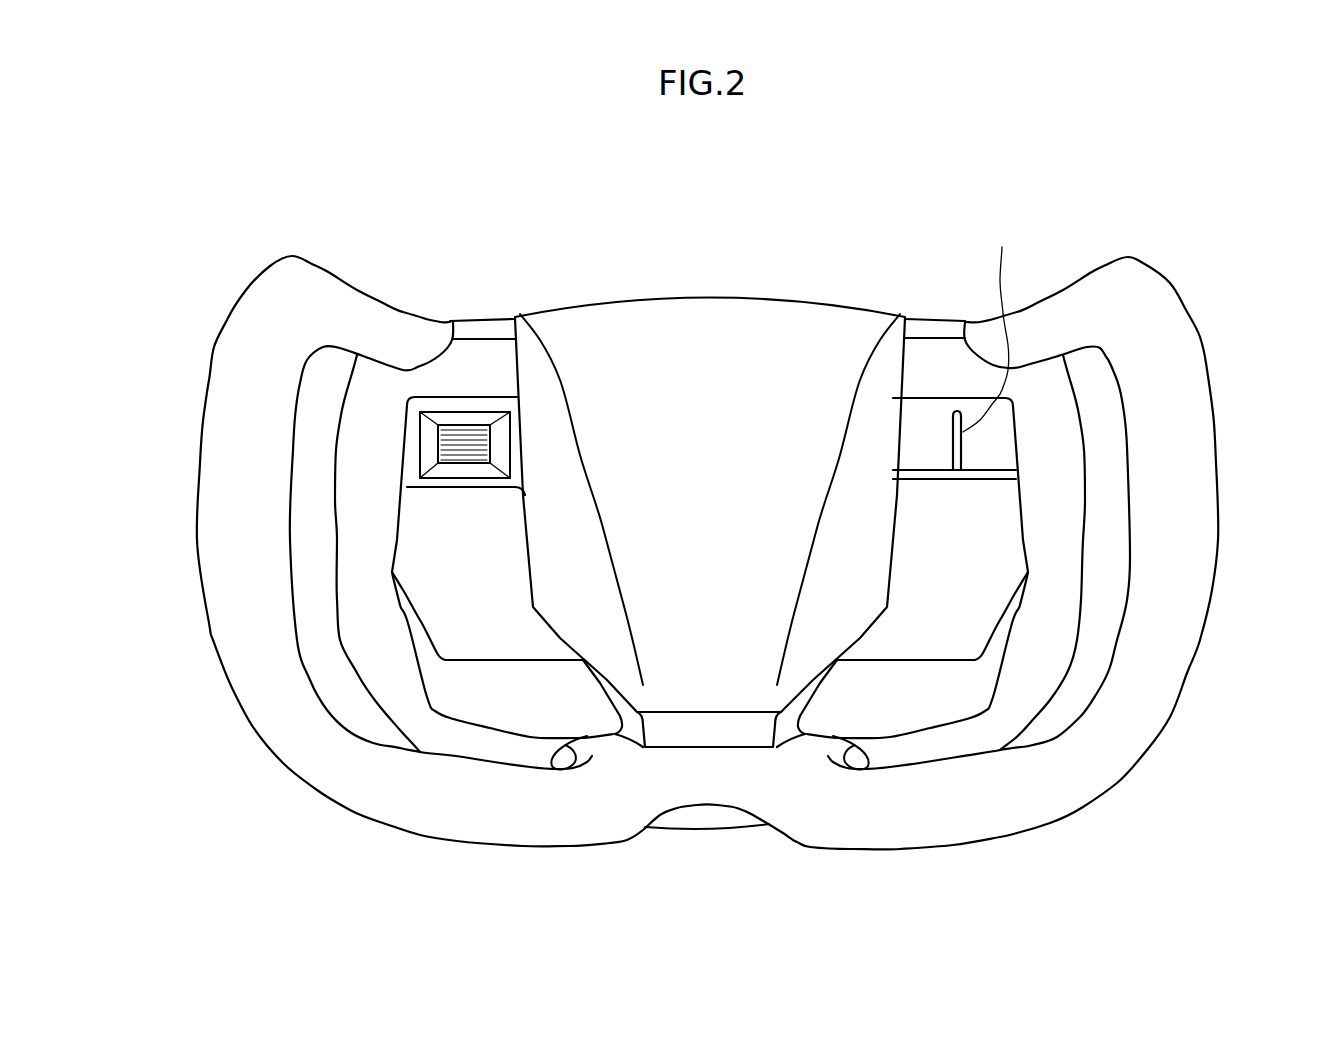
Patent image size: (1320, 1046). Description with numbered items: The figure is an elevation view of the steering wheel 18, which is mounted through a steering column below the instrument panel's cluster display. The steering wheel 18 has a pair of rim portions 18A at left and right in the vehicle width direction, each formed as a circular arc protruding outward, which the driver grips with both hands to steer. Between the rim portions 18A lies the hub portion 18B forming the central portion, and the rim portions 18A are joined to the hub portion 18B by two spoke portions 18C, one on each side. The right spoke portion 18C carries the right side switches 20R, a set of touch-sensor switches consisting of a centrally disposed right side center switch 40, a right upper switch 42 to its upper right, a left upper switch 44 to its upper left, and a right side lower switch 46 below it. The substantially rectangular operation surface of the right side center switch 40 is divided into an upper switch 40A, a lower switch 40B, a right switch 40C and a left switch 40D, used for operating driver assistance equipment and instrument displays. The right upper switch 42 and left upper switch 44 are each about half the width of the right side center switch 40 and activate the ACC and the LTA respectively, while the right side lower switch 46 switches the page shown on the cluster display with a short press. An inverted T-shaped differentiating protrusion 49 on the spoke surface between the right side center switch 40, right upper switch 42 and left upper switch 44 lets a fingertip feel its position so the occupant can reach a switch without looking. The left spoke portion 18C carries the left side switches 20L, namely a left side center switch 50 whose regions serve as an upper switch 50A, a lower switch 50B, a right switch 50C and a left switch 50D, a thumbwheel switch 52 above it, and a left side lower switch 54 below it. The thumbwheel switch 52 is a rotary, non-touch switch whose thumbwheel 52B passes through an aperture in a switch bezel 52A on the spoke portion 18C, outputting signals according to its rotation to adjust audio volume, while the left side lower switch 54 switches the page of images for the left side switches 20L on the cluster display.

The steering wheel 18 is at (509, 218).
The rim portions 18A is at (210, 362).
The hub portion 18B is at (710, 297).
The spoke portions 18C is at (475, 320).
The left side switches 20L is at (320, 658).
The right side switches 20R is at (1110, 628).
The right side center switch 40 is at (1033, 506).
The upper switch 40A is at (958, 497).
The lower switch 40B is at (948, 570).
The right switch 40C is at (987, 536).
The left switch 40D is at (907, 533).
The right upper switch 42 is at (997, 438).
The left upper switch 44 is at (903, 450).
The right side lower switch 46 is at (867, 707).
The differentiating protrusion 49 is at (992, 326).
The left side center switch 50 is at (388, 540).
The upper switch 50A is at (457, 513).
The lower switch 50B is at (477, 575).
The right switch 50C is at (507, 547).
The left switch 50D is at (433, 560).
The thumbwheel switch 52 is at (421, 388).
The switch bezel 52A is at (410, 452).
The thumbwheel 52B is at (453, 440).
The left side lower switch 54 is at (527, 717).